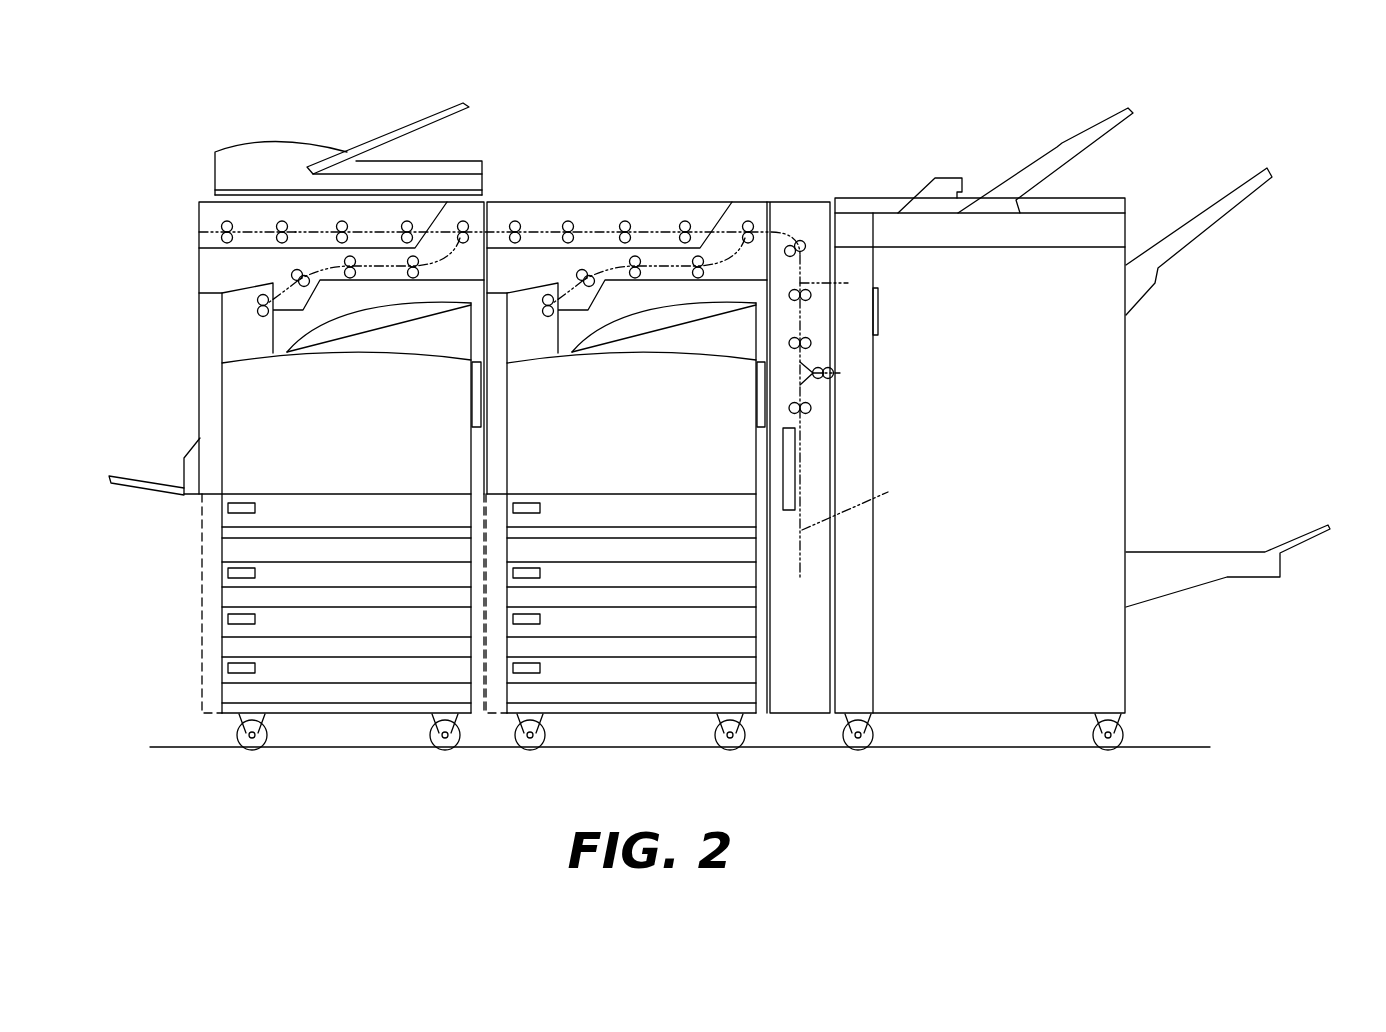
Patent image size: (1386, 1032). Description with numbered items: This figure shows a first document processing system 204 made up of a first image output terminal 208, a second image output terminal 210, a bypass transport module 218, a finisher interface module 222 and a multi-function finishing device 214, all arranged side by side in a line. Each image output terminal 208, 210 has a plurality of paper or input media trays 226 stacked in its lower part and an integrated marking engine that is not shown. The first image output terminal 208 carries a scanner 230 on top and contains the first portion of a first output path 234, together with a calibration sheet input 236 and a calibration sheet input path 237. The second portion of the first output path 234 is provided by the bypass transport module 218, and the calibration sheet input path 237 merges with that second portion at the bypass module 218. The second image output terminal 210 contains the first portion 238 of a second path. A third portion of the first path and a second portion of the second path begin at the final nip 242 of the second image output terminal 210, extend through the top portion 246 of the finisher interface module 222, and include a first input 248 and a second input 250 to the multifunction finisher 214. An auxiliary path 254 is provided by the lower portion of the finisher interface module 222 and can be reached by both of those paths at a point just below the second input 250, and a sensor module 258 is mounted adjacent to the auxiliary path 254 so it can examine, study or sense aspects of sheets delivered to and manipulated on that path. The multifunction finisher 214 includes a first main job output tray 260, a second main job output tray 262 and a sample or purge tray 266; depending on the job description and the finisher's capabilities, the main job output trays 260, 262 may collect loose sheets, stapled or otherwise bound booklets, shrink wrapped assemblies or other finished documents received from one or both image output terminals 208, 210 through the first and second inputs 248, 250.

The first document processing system 204 is at (1296, 181).
The first image output terminal 208 is at (237, 398).
The second image output terminal 210 is at (642, 715).
The multi-function finishing device 214 is at (1128, 395).
The bypass transport module 218 is at (592, 212).
The finisher interface module 222 is at (817, 197).
The input media trays 226 is at (222, 578).
The scanner 230 is at (237, 147).
The first output path 234 is at (297, 273).
The calibration sheet input 236 is at (199, 230).
The calibration sheet input path 237 is at (295, 228).
The first portion of second path 238 is at (667, 263).
The final nip 242 is at (750, 222).
The top portion of finisher interface module 246 is at (813, 268).
The first input 248 is at (840, 284).
The second input 250 is at (842, 375).
The auxiliary path 254 is at (866, 500).
The sensor module 258 is at (785, 470).
The first main job output tray 260 is at (1107, 132).
The second main job output tray 262 is at (1205, 232).
The sample or purge tray 266 is at (1230, 578).